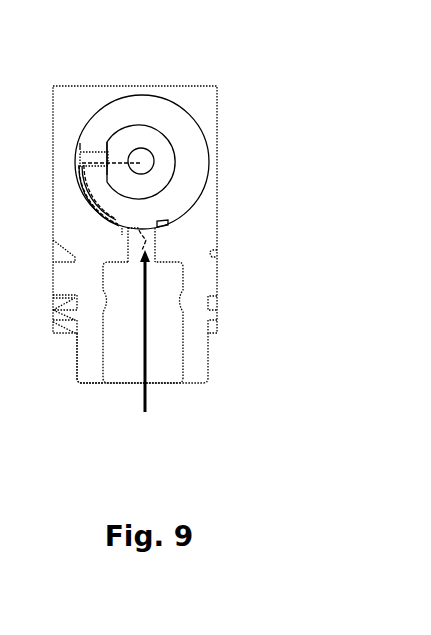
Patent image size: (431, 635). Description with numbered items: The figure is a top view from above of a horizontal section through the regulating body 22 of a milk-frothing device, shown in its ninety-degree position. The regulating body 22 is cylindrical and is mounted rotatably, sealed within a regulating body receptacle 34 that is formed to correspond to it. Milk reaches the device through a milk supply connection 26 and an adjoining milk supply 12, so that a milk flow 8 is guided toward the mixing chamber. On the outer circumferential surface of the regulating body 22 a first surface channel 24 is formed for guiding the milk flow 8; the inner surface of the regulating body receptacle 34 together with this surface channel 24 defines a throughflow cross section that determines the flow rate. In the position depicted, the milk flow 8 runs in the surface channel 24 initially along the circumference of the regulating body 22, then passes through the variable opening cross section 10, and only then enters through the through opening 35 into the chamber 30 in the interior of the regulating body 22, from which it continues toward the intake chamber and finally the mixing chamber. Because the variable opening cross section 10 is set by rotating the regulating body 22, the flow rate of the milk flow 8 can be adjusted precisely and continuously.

The milk flow 8 is at (83, 193).
The variable opening cross section 10 is at (122, 228).
The milk supply 12 is at (162, 323).
The regulating body 22 is at (112, 120).
The first surface channel 24 is at (75, 147).
The milk supply connection 26 is at (83, 377).
The chamber 30 is at (157, 140).
The regulating body receptacle 34 is at (202, 110).
The through opening 35 is at (97, 152).